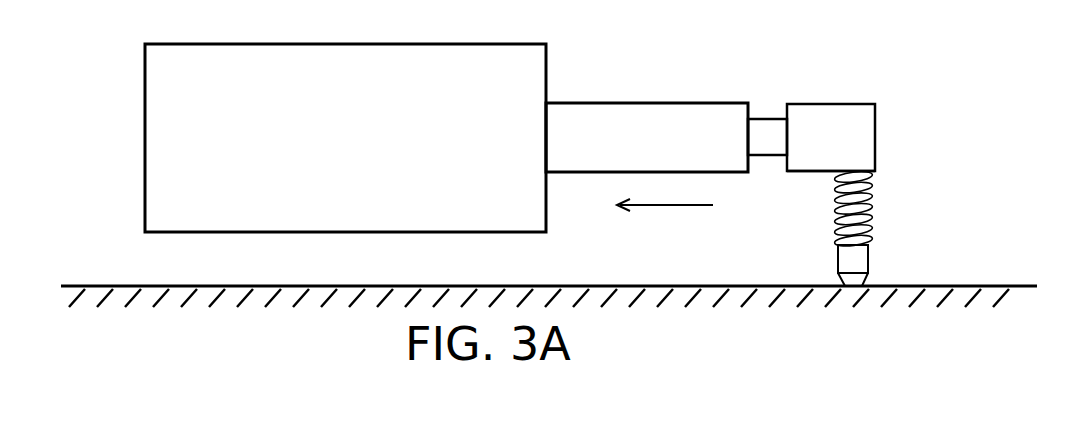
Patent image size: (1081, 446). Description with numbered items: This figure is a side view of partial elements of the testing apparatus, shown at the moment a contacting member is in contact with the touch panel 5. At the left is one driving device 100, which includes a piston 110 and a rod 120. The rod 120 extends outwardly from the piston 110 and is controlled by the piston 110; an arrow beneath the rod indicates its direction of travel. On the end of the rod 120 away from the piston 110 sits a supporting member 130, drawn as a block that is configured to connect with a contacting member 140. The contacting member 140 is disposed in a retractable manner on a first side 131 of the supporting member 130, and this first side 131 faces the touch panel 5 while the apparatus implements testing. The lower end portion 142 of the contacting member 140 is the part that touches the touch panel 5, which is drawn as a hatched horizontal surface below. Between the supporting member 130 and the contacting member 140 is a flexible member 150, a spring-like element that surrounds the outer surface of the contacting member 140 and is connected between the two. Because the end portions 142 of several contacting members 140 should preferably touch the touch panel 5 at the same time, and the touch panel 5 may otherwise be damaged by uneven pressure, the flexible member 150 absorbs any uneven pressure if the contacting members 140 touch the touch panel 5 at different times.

The driving device 100 is at (700, 42).
The piston 110 is at (538, 71).
The rod 120 is at (680, 114).
The supporting member 130 is at (860, 132).
The first side 131 is at (800, 172).
The contacting member 140 is at (862, 260).
The end portion 142 is at (866, 278).
The flexible member 150 is at (872, 205).
The touch panel 5 is at (1015, 289).